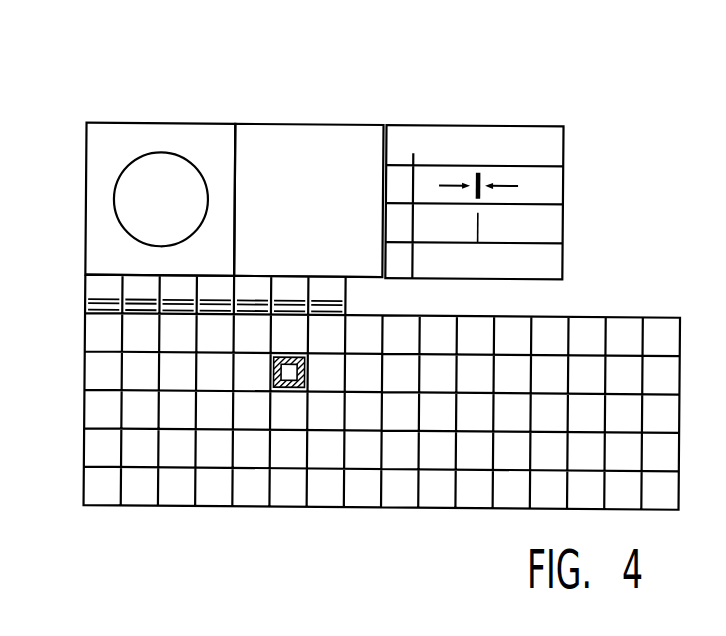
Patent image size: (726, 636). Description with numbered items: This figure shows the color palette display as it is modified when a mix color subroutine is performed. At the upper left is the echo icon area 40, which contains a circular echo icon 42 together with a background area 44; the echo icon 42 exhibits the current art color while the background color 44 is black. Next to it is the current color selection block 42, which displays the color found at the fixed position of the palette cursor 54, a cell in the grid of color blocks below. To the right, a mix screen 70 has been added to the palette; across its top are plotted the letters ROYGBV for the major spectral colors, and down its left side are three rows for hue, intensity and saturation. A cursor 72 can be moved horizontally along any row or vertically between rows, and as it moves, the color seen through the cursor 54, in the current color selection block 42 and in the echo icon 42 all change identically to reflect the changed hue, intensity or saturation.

The echo icon area 40 is at (132, 123).
The echo icon 42 is at (114, 196).
The background area 44 is at (98, 247).
The cursor 54 is at (285, 389).
The mix screen 70 is at (507, 112).
The cursor 72 is at (488, 197).